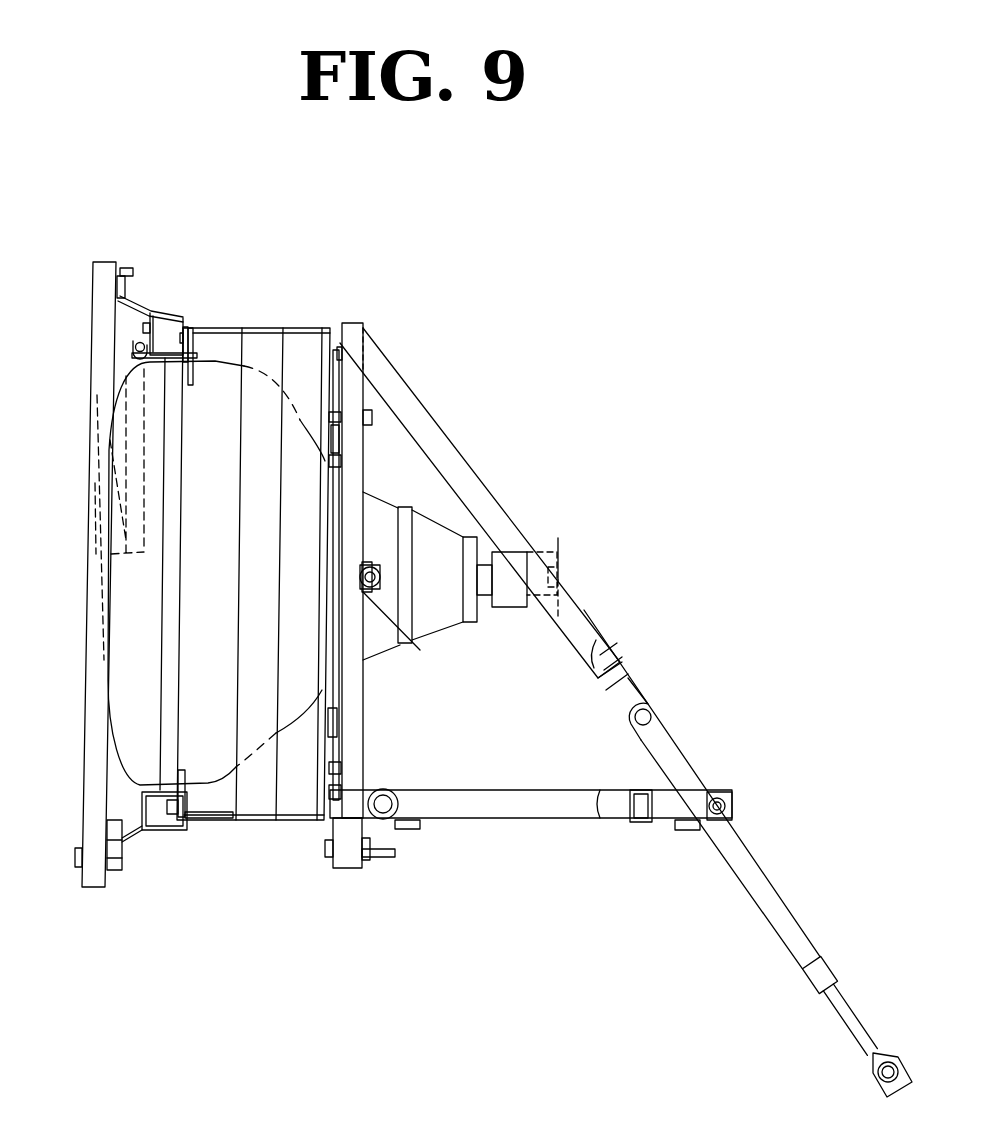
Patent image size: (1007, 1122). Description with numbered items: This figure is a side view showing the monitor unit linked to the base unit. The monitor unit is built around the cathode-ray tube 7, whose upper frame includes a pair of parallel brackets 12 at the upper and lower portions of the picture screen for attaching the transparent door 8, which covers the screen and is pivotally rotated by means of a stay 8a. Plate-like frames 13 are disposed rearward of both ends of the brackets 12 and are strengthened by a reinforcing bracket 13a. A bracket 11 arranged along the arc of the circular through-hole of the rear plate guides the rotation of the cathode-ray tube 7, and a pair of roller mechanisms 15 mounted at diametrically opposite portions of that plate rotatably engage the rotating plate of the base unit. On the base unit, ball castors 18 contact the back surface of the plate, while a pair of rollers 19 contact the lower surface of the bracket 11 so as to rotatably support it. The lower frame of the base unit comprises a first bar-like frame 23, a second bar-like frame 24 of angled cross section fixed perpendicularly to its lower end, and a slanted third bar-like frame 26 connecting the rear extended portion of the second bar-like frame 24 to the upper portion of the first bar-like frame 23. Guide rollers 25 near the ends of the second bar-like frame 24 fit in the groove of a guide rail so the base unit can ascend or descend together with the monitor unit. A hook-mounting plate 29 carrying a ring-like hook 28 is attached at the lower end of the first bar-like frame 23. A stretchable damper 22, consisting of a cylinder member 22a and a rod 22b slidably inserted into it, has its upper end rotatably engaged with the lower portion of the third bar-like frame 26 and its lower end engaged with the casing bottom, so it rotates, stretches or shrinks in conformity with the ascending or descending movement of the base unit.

The cathode-ray tube 7 is at (223, 383).
The transparent door 8 is at (90, 706).
The stay 8a is at (144, 561).
The bracket 11 is at (328, 690).
The brackets 12 is at (133, 295).
The plate-like frames 13 is at (208, 822).
The reinforcing bracket 13a is at (258, 792).
The roller mechanisms 15 is at (400, 642).
The ball castors 18 is at (322, 487).
The rollers 19 is at (343, 722).
The stretchable damper 22 is at (721, 858).
The cylinder member 22a is at (800, 935).
The rod 22b is at (860, 1025).
The first bar-like frame 23 is at (350, 692).
The second bar-like frame 24 is at (498, 797).
The guide rollers 25 is at (388, 790).
The third bar-like frame 26 is at (480, 491).
The ring-like hook 28 is at (385, 858).
The hook-mounting plate 29 is at (334, 860).